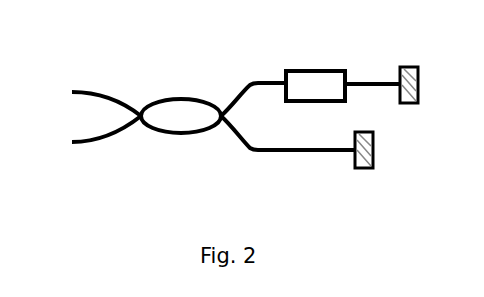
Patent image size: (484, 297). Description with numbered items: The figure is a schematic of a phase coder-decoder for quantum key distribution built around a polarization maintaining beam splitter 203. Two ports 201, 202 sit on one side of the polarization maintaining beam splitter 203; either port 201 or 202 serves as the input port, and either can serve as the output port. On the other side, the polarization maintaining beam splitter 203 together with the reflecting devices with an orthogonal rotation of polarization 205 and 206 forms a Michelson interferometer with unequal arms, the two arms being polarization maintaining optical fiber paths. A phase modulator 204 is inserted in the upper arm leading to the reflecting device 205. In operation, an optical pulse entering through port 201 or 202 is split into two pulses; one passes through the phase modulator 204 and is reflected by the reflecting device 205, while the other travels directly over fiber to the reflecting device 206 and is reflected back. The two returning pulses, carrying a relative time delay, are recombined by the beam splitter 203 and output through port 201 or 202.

The port 201 is at (89, 100).
The port 202 is at (89, 134).
The polarization maintaining beam splitter 203 is at (181, 116).
The phase modulator 204 is at (315, 86).
The reflecting device with an orthogonal rotation of polarization 205 is at (409, 76).
The reflecting device with an orthogonal rotation of polarization 206 is at (364, 140).